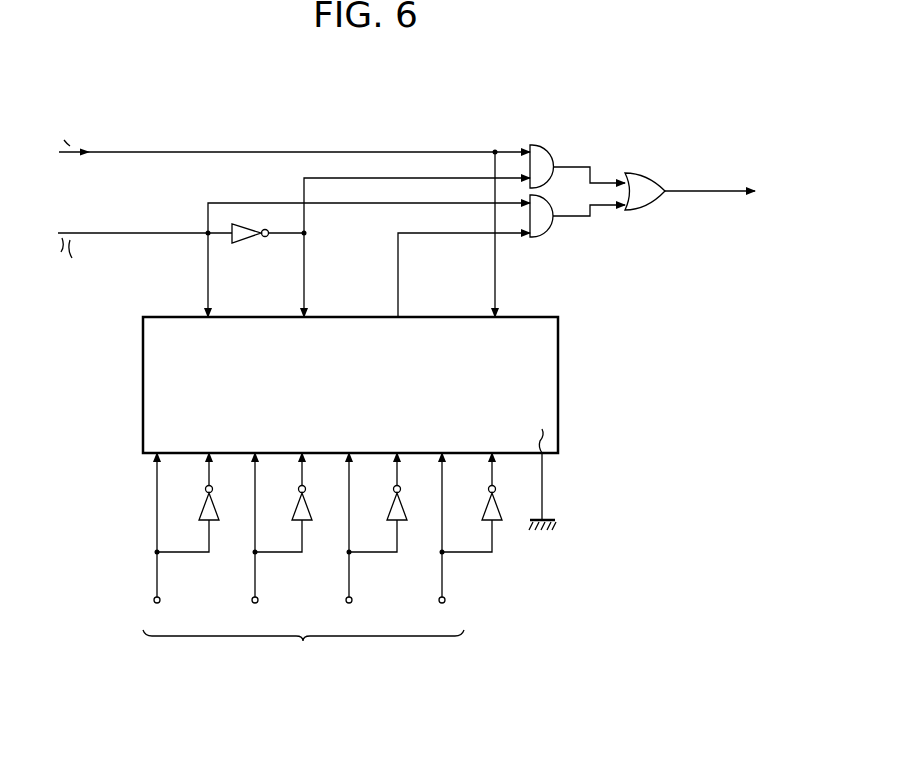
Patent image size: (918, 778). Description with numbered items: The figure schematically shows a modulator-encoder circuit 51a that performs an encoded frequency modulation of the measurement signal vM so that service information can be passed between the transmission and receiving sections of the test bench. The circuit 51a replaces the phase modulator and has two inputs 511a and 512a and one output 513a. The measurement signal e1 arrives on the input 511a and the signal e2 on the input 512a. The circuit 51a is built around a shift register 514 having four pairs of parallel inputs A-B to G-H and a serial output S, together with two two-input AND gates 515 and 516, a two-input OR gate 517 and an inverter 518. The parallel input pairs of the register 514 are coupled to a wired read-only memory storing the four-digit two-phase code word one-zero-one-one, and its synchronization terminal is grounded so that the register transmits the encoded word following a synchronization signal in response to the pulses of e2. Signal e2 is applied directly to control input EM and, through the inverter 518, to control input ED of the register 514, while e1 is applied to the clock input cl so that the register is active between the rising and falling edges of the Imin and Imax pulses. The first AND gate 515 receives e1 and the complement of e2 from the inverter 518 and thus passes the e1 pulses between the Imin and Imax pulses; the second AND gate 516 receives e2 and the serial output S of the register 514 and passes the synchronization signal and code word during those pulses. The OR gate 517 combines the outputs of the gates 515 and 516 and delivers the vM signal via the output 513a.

The modulator-encoder circuit 51a is at (604, 87).
The input 511a is at (208, 149).
The input 512a is at (134, 233).
The output 513a is at (726, 196).
The shift register 514 is at (563, 370).
The first AND gate 515 is at (554, 146).
The second AND gate 516 is at (549, 234).
The OR gate 517 is at (651, 167).
The inverter 518 is at (232, 243).